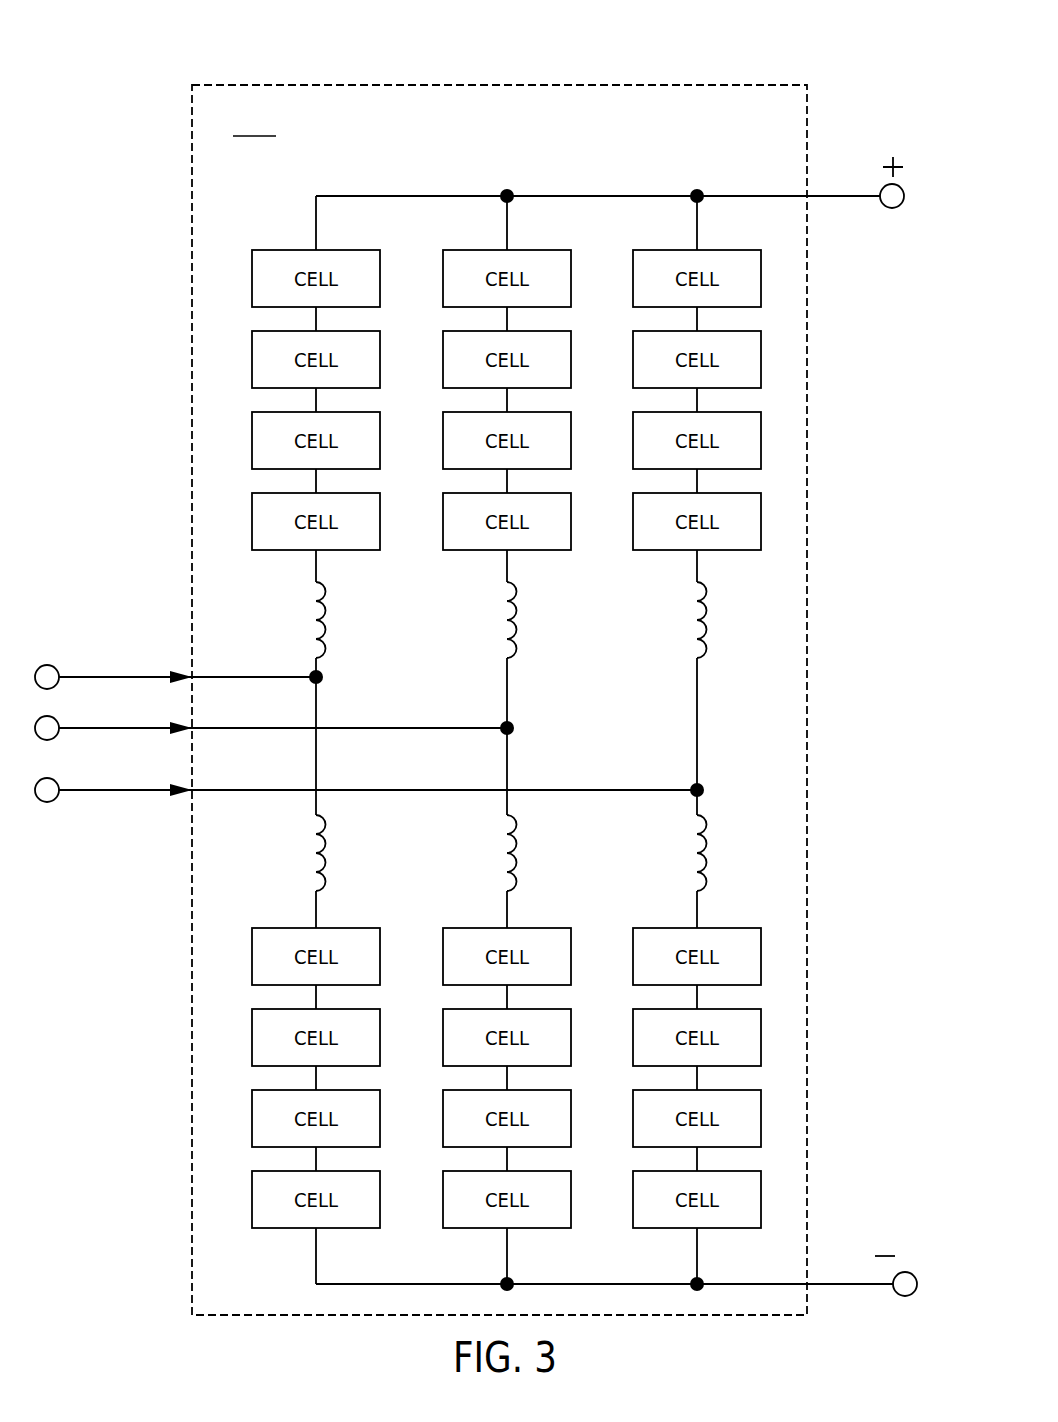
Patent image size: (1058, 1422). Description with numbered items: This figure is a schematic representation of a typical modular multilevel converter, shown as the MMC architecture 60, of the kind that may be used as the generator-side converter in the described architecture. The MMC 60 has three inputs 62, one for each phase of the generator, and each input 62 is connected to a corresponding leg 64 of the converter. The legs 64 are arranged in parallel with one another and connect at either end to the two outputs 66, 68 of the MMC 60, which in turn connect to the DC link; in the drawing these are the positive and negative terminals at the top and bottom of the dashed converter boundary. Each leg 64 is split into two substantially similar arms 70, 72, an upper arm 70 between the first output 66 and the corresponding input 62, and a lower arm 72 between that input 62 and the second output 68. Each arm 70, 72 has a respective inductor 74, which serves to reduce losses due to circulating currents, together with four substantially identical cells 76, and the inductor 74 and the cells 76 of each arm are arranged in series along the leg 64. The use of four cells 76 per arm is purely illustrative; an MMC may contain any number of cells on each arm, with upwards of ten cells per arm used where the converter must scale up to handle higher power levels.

The MMC architecture 60 is at (256, 70).
The inputs 62 is at (108, 610).
The leg 64 is at (380, 172).
The output 66 is at (837, 195).
The output 68 is at (825, 1283).
The arm 70 is at (196, 407).
The arm 72 is at (197, 1068).
The inductor 74 is at (324, 593).
The cell 76 is at (270, 551).